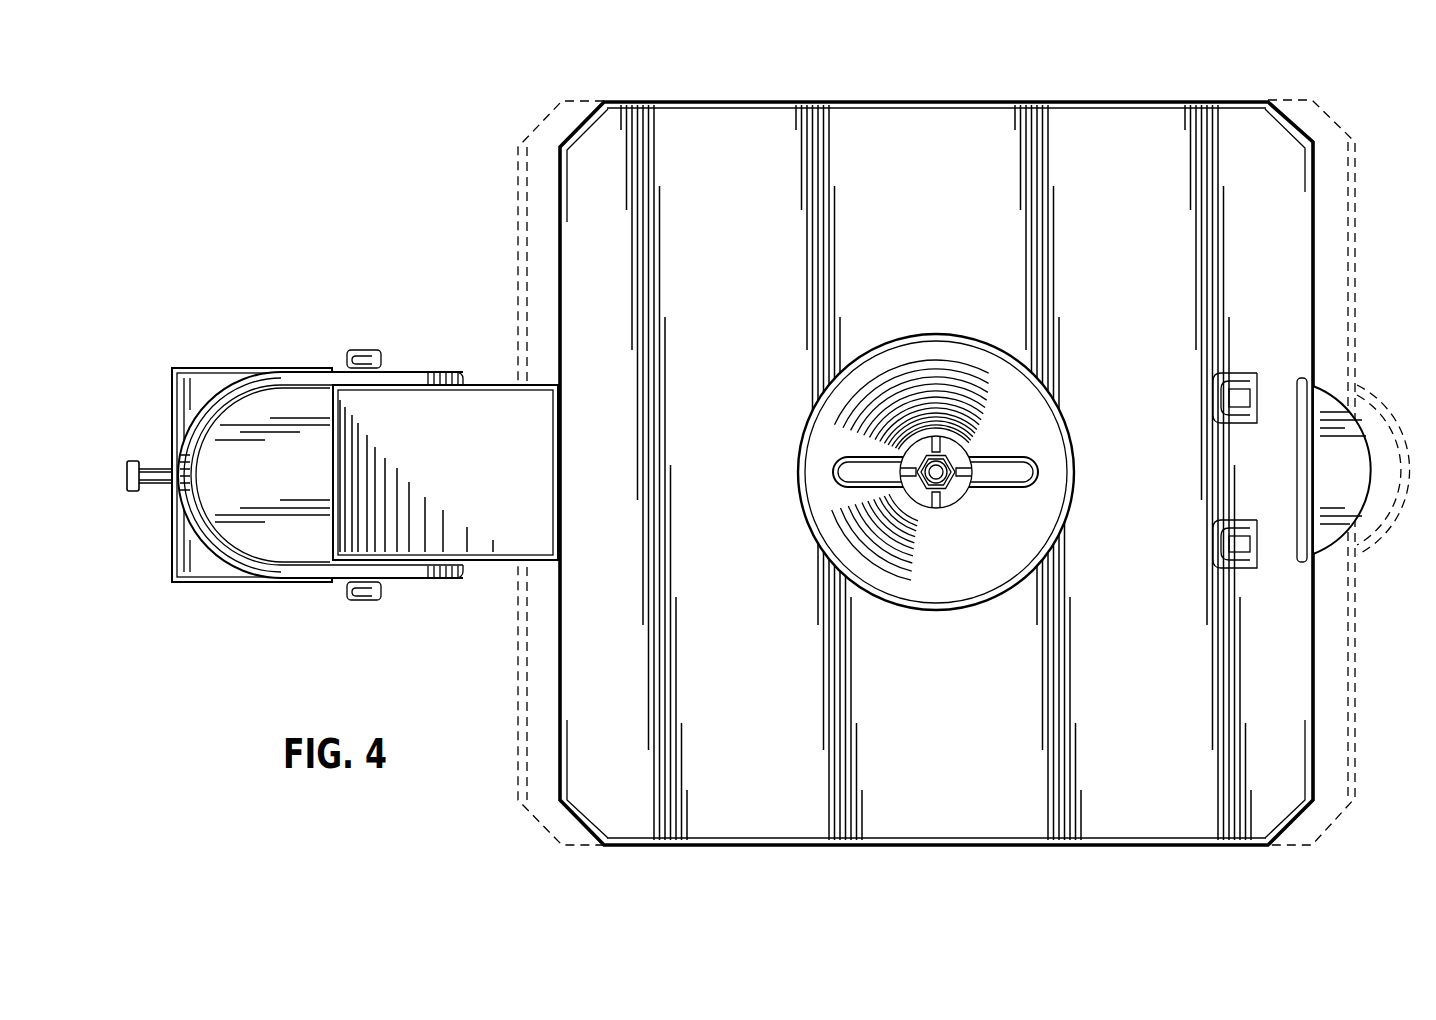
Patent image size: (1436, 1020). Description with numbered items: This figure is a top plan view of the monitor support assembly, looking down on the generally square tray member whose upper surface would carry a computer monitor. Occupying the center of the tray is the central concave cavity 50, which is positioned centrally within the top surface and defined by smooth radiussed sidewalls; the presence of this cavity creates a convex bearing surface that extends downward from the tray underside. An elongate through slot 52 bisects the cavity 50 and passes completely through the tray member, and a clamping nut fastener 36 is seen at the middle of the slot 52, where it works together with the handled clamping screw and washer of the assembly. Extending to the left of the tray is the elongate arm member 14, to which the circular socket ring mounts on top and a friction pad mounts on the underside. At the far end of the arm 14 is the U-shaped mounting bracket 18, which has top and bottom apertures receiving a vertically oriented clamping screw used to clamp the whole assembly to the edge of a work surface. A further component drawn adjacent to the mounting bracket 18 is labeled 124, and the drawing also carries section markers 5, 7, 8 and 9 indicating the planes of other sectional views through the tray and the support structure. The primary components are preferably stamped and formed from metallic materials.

The elongate arm member 14 is at (475, 433).
The U-shaped mounting bracket 18 is at (172, 398).
The U-shaped bracket 124 is at (262, 378).
The central concave cavity 50 is at (876, 378).
The clamping nut fastener 36 is at (947, 450).
The elongate through slot 52 is at (997, 476).
The section line 5- 5 is at (108, 468).
The section line 7- 7 is at (724, 472).
The section line 8- 8 is at (750, 472).
The section line 9- 9 is at (730, 472).